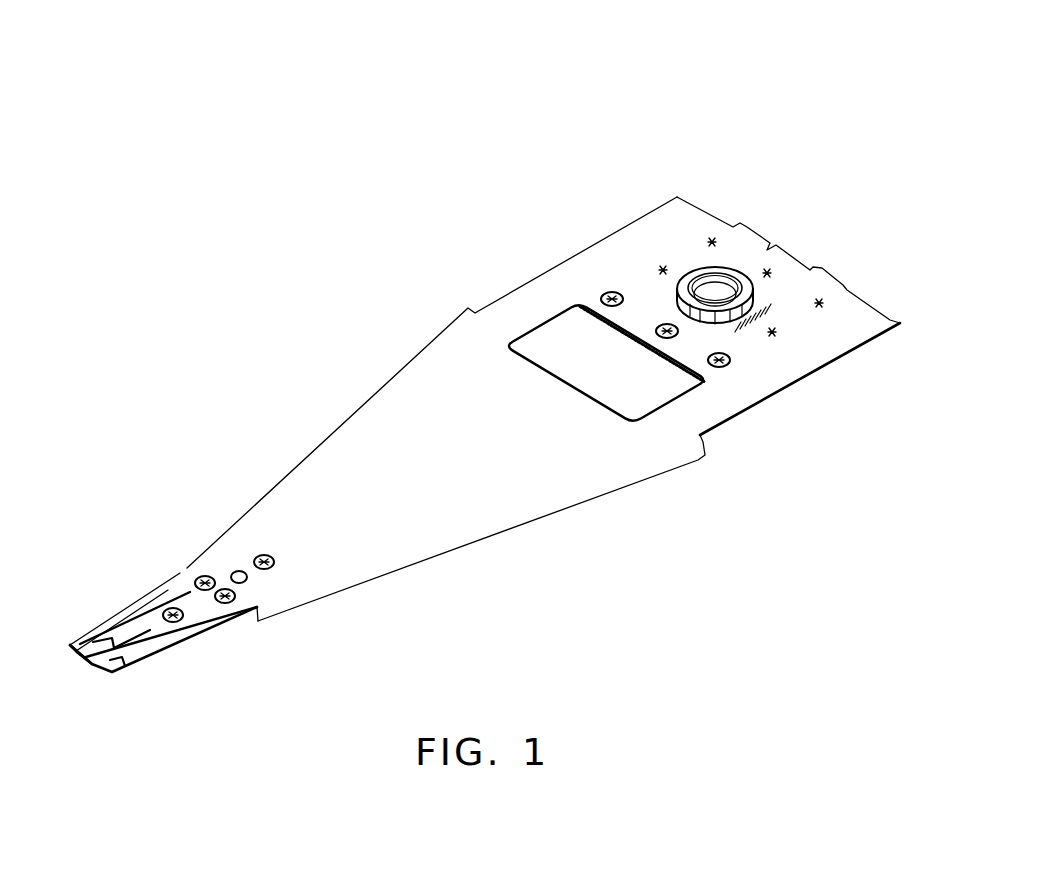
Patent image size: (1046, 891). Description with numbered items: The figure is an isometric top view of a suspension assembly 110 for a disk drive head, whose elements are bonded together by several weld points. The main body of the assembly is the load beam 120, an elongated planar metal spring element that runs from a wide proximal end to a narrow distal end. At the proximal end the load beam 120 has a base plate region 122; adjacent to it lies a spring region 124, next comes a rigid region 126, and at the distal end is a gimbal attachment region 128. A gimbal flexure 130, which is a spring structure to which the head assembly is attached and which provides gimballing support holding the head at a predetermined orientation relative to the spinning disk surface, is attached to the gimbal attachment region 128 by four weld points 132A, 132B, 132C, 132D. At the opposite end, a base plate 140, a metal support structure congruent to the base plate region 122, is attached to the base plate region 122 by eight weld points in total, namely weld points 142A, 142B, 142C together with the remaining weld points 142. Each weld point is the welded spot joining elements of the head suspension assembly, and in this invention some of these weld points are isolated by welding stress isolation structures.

The suspension assembly 110 is at (430, 185).
The load beam 120 is at (397, 373).
The base plate region 122 is at (753, 243).
The spring region 124 is at (525, 320).
The rigid region 126 is at (418, 483).
The gimbal attachment region 128 is at (139, 630).
The gimbal flexure 130 is at (102, 657).
The weld point 132A is at (183, 617).
The weld point 132B is at (233, 598).
The weld point 132C is at (204, 577).
The weld point 132D is at (277, 558).
The base plate 140 is at (634, 341).
The weld points 142 is at (612, 292).
The weld point 142A is at (606, 297).
The weld point 142B is at (670, 338).
The weld point 142C is at (724, 365).